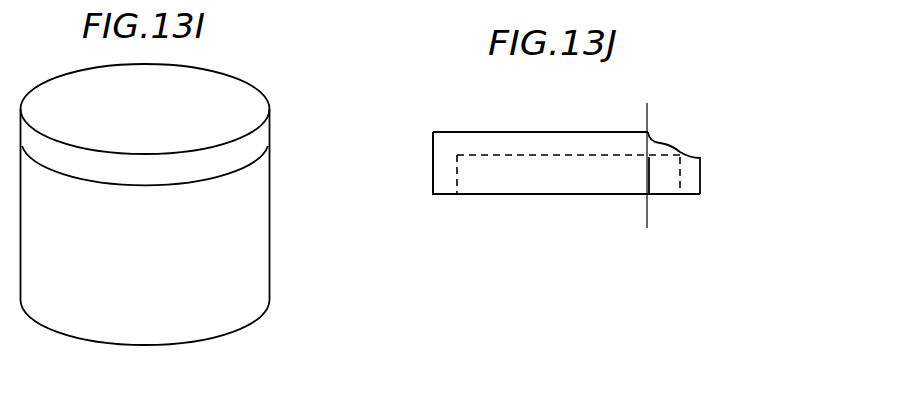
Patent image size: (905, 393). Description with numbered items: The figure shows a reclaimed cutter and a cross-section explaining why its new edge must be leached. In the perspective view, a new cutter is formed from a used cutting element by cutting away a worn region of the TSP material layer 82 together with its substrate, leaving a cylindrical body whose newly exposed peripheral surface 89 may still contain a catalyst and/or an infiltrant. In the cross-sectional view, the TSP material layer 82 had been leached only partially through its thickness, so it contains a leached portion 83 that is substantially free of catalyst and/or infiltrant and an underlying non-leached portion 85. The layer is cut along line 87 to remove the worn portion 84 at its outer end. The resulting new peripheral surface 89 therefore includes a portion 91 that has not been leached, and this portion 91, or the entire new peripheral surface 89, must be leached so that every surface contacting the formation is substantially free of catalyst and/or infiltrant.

In FIG. 13I, the TSP material layer 82 is at (247, 110).
In FIG. 13J, the TSP material layer 82 is at (420, 173).
In FIG. 13J, the leached portion 83 is at (443, 170).
In FIG. 13J, the worn portion 84 is at (682, 152).
In FIG. 13J, the non-leached portion 85 is at (563, 178).
In FIG. 13J, the cut line 87 is at (648, 118).
In FIG. 13I, the newly exposed peripheral surface 89 is at (251, 148).
In FIG. 13J, the newly exposed peripheral surface 89 is at (645, 146).
In FIG. 13J, the non-leached portion of the new peripheral surface 91 is at (650, 175).